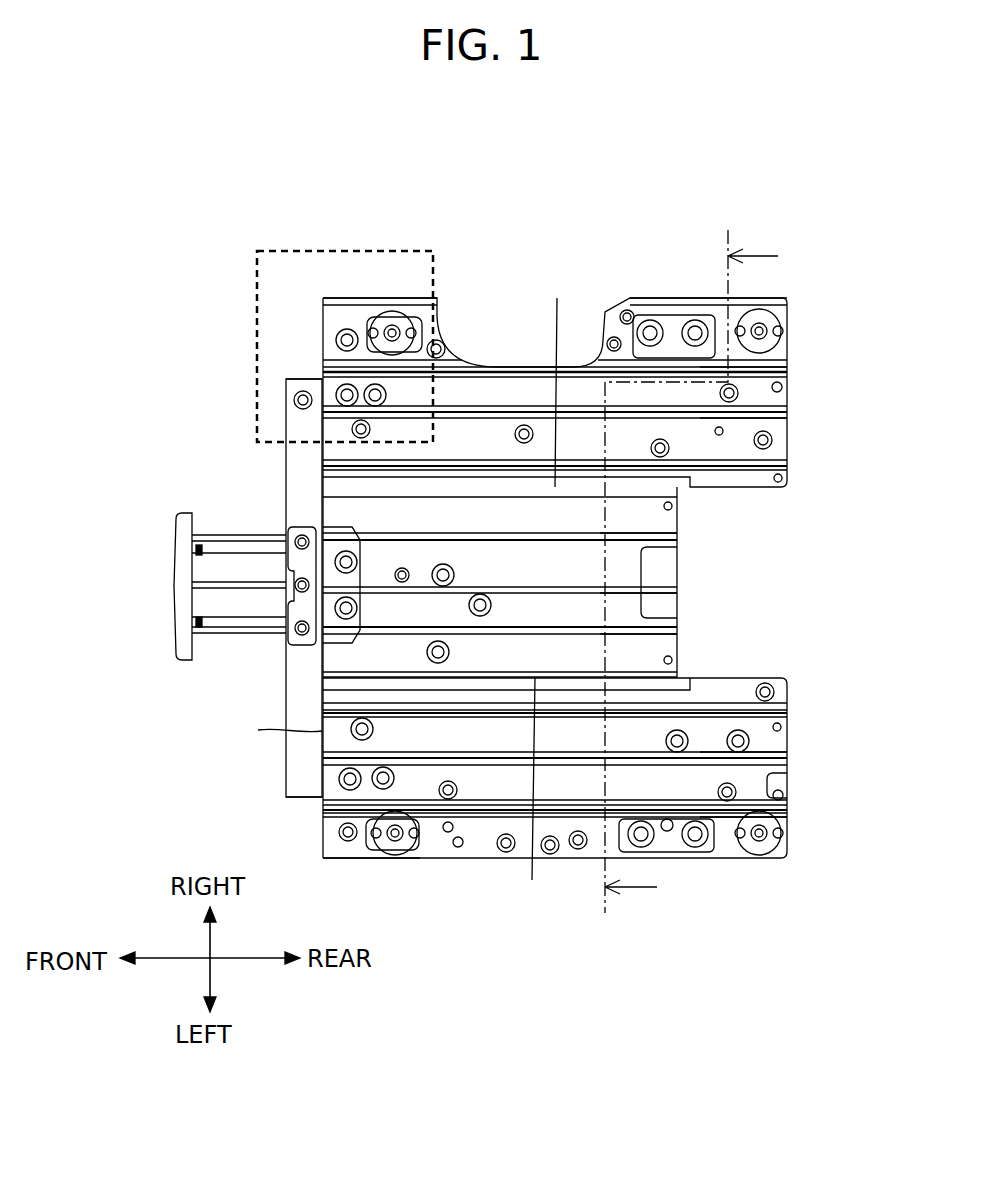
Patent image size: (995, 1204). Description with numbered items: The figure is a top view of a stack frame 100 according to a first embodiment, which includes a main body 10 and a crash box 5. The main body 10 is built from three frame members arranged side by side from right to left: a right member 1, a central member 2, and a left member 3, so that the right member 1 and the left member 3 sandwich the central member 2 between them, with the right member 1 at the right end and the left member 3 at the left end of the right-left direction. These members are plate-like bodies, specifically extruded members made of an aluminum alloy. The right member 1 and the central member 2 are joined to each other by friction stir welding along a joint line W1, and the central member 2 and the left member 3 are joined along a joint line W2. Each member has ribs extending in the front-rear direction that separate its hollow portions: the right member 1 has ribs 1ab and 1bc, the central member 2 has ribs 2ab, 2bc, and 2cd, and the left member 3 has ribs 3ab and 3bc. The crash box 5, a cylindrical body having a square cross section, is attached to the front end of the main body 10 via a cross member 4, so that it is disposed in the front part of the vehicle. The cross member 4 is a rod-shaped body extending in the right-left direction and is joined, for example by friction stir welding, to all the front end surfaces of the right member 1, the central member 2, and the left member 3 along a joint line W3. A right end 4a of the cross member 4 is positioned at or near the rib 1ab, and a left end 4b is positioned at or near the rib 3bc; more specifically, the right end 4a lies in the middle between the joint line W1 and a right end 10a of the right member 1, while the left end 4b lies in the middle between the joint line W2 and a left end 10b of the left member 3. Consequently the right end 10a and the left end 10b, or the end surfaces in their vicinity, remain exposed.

The stack frame 100 is at (692, 192).
The right member 1 is at (787, 393).
The rib 1ab is at (787, 367).
The rib 1bc is at (787, 418).
The central member 2 is at (677, 566).
The rib 2ab is at (677, 534).
The rib 2bc is at (677, 590).
The rib 2cd is at (677, 634).
The left member 3 is at (787, 783).
The rib 3ab is at (787, 750).
The rib 3bc is at (787, 803).
The cross member 4 is at (285, 393).
The right end of the cross member 4a is at (294, 378).
The left end of the cross member 4b is at (296, 797).
The crash box 5 is at (209, 535).
The main body 10 is at (658, 298).
The right end 10a is at (326, 298).
The left end 10b is at (347, 860).
The joint line W1 is at (555, 377).
The joint line W2 is at (533, 799).
The joint line W3 is at (270, 729).